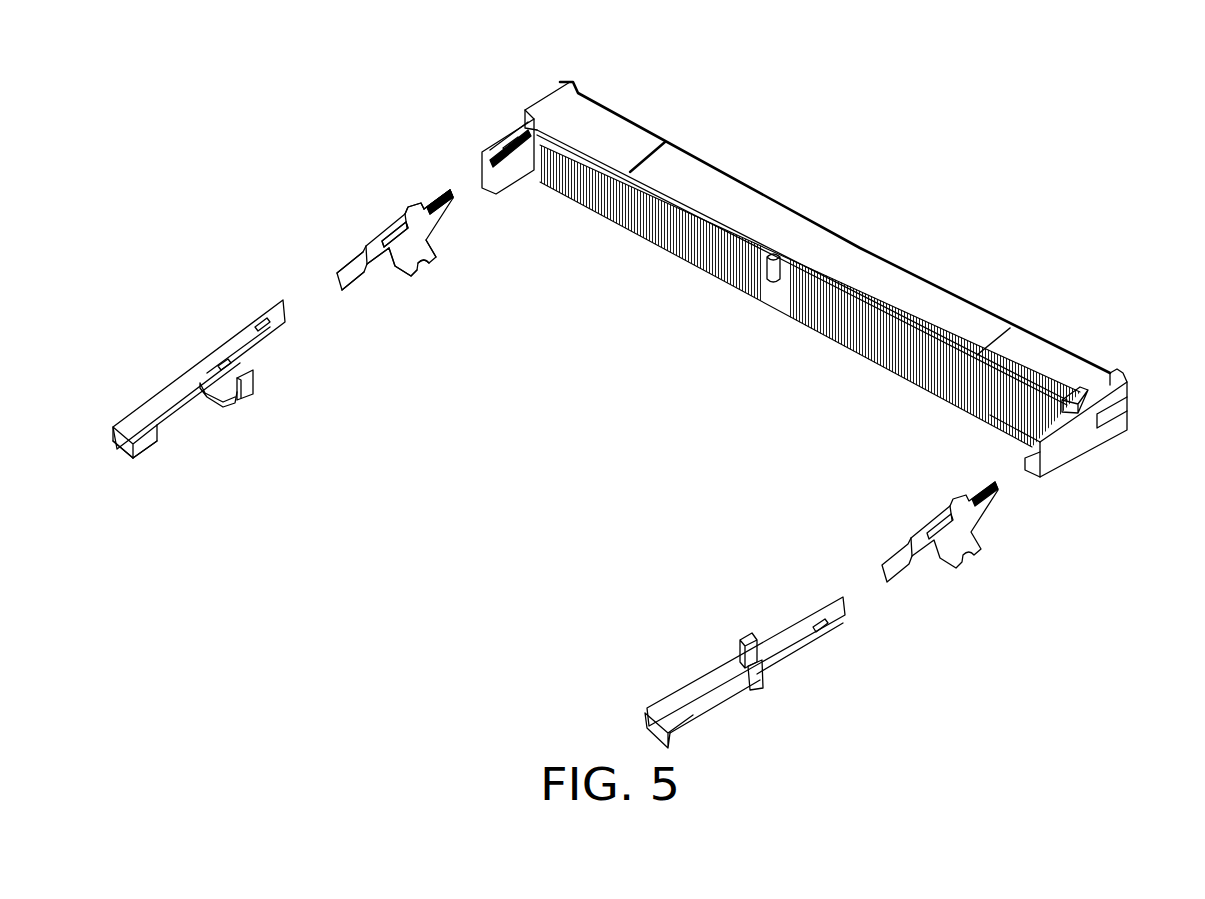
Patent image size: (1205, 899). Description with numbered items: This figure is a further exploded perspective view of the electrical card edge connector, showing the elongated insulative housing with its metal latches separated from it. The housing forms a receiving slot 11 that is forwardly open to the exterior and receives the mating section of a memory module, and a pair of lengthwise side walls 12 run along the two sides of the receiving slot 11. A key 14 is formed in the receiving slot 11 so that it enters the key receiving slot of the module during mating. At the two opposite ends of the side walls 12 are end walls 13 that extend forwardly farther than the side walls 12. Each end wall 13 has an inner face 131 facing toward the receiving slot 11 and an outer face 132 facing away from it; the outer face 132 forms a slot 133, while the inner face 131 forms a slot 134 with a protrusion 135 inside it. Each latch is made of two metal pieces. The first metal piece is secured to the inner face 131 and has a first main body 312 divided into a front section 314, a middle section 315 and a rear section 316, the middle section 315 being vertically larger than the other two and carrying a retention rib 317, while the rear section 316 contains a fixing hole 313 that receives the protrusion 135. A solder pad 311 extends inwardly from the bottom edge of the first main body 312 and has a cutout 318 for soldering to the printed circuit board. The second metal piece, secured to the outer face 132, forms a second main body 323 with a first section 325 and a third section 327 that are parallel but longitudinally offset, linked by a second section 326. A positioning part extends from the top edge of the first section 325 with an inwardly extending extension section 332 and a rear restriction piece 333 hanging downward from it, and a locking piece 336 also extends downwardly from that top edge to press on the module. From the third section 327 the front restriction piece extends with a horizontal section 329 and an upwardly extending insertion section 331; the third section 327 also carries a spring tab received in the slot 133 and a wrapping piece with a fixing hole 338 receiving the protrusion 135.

The receiving slot 11 is at (755, 248).
The side walls 12 is at (890, 277).
The end walls 13 is at (1050, 457).
The inner face 131 is at (507, 178).
The outer face 132 is at (1080, 447).
The slot 133 is at (1127, 408).
The slot 134 is at (508, 137).
The protrusion 135 is at (523, 125).
The key 14 is at (778, 256).
The solder pad 311 is at (407, 275).
The first main body 312 is at (377, 257).
The fixing hole 313 is at (440, 213).
The front section 314 is at (345, 277).
The middle section 315 is at (372, 243).
The rear section 316 is at (453, 187).
The retention rib 317 is at (408, 208).
The cutout 318 is at (423, 267).
The second main body 323 is at (178, 397).
The first section 325 is at (722, 697).
The second section 326 is at (760, 690).
The third section 327 is at (800, 643).
The horizontal section 329 is at (222, 405).
The insertion section 331 is at (257, 367).
The extension section 332 is at (113, 442).
The rear restriction piece 333 is at (147, 443).
The locking piece 336 is at (147, 407).
The fixing hole 338 is at (230, 356).